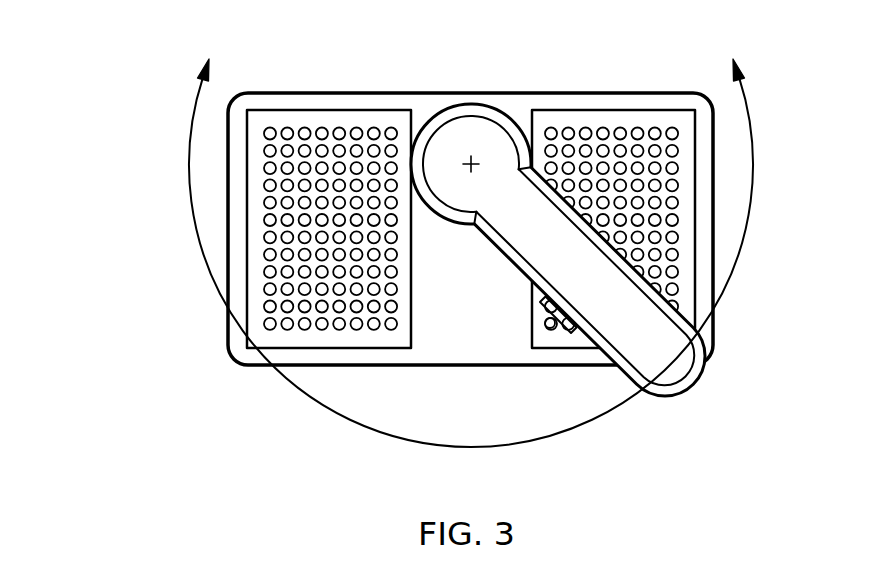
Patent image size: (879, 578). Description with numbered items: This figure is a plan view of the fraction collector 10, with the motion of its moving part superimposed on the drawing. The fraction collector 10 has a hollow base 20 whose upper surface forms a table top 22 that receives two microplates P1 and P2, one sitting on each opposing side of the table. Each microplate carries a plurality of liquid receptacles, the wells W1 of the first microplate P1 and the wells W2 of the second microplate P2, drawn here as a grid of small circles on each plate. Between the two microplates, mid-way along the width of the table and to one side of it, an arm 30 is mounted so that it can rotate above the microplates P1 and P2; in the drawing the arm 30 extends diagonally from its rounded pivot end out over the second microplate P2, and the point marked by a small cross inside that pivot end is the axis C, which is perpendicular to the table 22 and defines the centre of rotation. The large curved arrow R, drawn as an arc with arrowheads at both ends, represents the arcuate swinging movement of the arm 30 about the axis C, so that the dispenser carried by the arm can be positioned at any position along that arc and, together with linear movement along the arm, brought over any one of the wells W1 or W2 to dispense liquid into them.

The fraction collector 10 is at (100, 228).
The hollow base 20 is at (228, 342).
The table top 22 is at (482, 324).
The arm 30 is at (580, 270).
The axis C is at (474, 157).
The microplate P1 is at (320, 117).
The microplate P2 is at (584, 110).
The wells W1 is at (268, 167).
The wells W2 is at (638, 202).
The arrow R is at (413, 440).